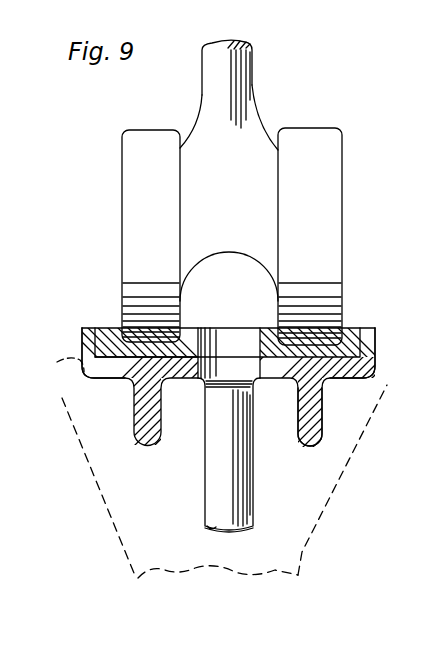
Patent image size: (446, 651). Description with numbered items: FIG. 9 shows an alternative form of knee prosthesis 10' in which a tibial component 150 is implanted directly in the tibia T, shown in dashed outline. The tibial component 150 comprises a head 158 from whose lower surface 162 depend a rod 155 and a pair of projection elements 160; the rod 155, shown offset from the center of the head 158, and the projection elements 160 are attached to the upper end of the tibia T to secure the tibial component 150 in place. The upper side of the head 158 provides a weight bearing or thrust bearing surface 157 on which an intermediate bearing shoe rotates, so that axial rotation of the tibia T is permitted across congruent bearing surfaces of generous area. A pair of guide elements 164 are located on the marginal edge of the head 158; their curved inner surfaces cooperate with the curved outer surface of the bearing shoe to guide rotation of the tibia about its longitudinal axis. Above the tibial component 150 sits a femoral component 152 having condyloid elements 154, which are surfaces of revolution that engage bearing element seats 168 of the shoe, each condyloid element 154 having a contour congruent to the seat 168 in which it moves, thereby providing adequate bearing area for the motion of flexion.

The prosthesis 10' is at (388, 154).
The tibial component 150 is at (258, 509).
The femoral component 152 is at (255, 72).
The condyloid elements 154 is at (316, 138).
The rod 155 is at (220, 458).
The surface 157 is at (343, 315).
The head 158 is at (375, 360).
The projection elements 160 is at (305, 425).
The surface 162 is at (88, 381).
The guide elements 164 is at (95, 345).
The bearing element seats 168 is at (292, 340).
The tibia T is at (268, 546).